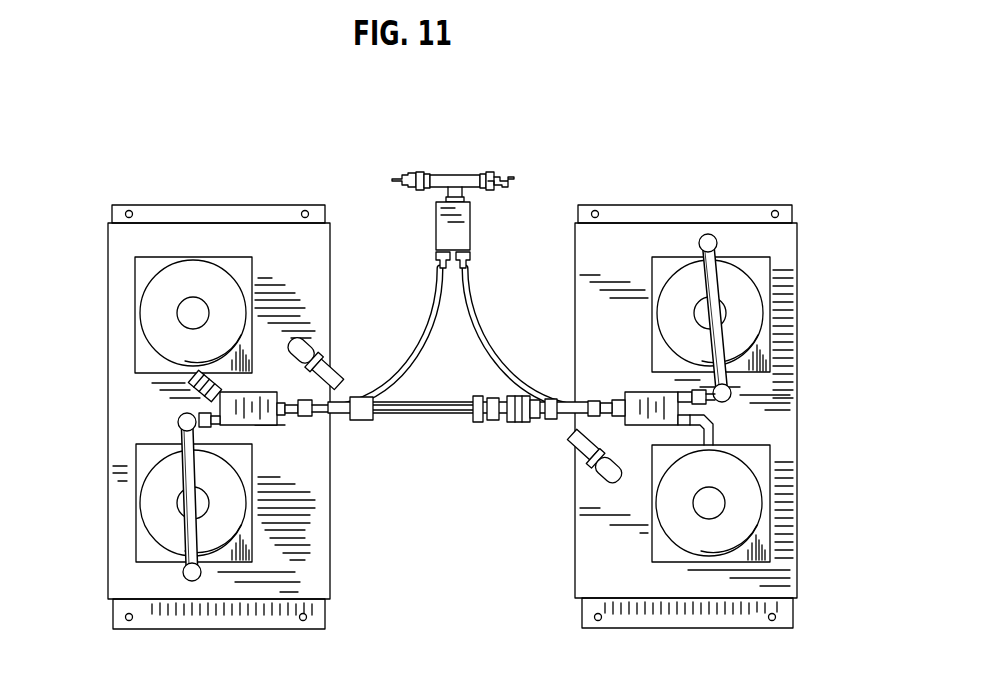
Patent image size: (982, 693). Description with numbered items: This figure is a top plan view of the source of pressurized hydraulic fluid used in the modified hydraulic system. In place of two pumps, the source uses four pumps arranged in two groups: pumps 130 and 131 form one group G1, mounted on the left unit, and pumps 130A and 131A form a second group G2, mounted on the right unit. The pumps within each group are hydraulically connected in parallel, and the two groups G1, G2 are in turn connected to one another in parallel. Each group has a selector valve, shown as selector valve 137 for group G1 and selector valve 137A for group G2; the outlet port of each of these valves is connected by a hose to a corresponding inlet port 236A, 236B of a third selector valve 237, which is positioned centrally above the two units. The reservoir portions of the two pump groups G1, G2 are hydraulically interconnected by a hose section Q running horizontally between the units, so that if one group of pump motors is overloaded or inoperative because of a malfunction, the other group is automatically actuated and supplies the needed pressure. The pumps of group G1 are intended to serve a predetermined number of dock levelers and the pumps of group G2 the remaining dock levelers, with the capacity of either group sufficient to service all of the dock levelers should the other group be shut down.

The first pump group G1 is at (230, 198).
The second pump group G2 is at (712, 193).
The pump 130 is at (153, 302).
The pump 131 is at (165, 523).
The pump 130A is at (742, 275).
The pump 131A is at (748, 485).
The selector valve 137 is at (258, 430).
The selector valve 137A is at (632, 388).
The third selector valve 237 is at (428, 228).
The inlet port 236A is at (436, 256).
The inlet port 236B is at (470, 258).
The hose section Q is at (450, 417).